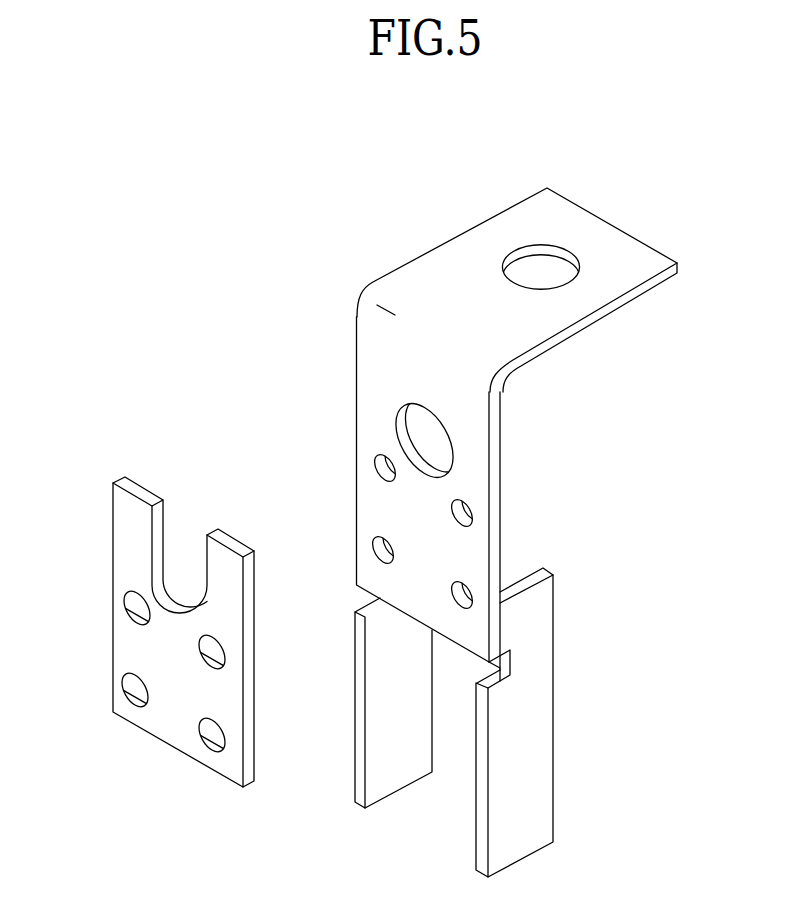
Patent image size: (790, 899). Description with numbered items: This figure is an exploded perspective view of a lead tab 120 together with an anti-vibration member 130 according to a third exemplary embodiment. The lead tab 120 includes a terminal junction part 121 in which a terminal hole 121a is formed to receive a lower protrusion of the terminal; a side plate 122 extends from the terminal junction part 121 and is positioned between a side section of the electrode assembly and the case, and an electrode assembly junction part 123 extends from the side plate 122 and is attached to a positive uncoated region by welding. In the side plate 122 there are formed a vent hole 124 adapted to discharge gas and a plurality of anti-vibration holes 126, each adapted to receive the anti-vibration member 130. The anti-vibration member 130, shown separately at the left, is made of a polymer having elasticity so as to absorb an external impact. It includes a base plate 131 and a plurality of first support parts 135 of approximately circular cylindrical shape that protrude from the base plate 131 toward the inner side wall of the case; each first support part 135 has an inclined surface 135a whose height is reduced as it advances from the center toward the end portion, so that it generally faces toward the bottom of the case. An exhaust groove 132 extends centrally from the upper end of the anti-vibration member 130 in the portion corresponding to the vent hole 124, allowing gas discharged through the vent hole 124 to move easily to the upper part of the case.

The lead tab 120 is at (478, 508).
The terminal junction part 121 is at (615, 252).
The terminal hole 121a is at (542, 246).
The side plate 122 is at (373, 408).
The electrode assembly junction part 123 is at (535, 763).
The vent hole 124 is at (448, 439).
The anti-vibration holes 126 is at (471, 508).
The anti-vibration member 130 is at (147, 615).
The base plate 131 is at (177, 727).
The exhaust groove 132 is at (193, 553).
The first support part 135 is at (127, 685).
The inclined surface 135a is at (127, 703).